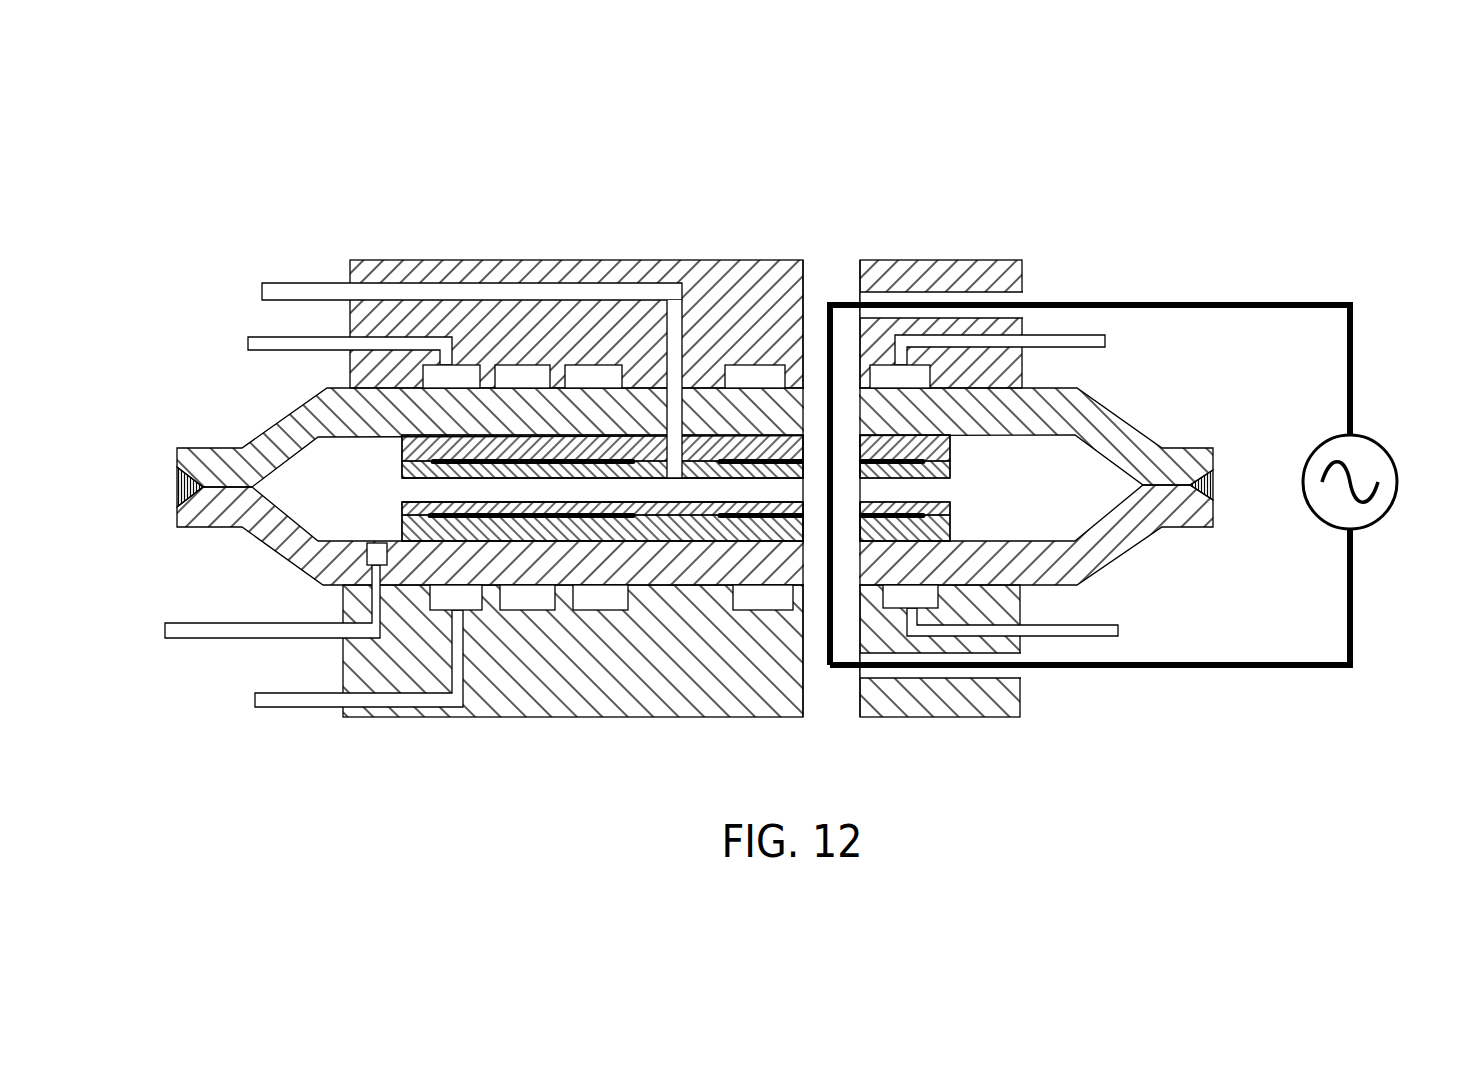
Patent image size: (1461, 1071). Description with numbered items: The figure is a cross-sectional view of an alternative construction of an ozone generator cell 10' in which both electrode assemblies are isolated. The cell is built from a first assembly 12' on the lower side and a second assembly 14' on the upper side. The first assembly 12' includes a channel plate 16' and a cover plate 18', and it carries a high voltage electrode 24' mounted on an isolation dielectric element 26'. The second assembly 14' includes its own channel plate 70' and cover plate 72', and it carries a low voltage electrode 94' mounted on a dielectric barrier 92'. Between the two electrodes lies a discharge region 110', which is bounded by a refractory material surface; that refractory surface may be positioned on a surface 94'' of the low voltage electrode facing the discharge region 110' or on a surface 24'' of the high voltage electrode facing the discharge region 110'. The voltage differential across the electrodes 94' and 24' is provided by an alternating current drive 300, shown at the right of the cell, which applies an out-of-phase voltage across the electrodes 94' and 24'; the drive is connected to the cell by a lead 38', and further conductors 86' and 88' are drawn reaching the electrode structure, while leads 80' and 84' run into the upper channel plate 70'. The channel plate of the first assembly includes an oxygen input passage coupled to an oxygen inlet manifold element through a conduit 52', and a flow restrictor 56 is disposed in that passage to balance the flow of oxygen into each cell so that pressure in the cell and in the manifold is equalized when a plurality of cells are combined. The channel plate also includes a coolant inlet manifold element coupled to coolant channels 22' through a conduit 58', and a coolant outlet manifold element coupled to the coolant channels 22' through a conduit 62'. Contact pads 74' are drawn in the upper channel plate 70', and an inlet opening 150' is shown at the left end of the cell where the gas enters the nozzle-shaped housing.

The ozone generator cell 10' is at (890, 122).
The first assembly 12' is at (723, 550).
The second assembly 14' is at (717, 421).
The channel plate 16' is at (692, 676).
The cover plate 18' is at (695, 550).
The coolant channels 22' is at (611, 678).
The high voltage electrode 24' is at (875, 499).
The surface 24'' is at (619, 628).
The isolation dielectric element 26' is at (746, 624).
The power lead 38' is at (1090, 510).
The conduit 52' is at (272, 635).
The flow restrictor 56 is at (371, 543).
The conduit 58' is at (359, 687).
The conduit 62' is at (1049, 619).
The channel plate 70' is at (733, 304).
The cover plate 72' is at (695, 421).
The upper contact pads 74' is at (640, 297).
The upper heater lead 80' is at (347, 365).
The upper right lead 84' is at (1043, 353).
The electrode feed conductor 86' is at (691, 342).
The electrode lead 88' is at (472, 254).
The dielectric barrier 92' is at (707, 462).
The low voltage electrode 94' is at (968, 474).
The surface 94'' is at (571, 470).
The discharge region 110' is at (602, 625).
The inlet orifice 150' is at (139, 496).
The alternating current drive 300 is at (1375, 445).